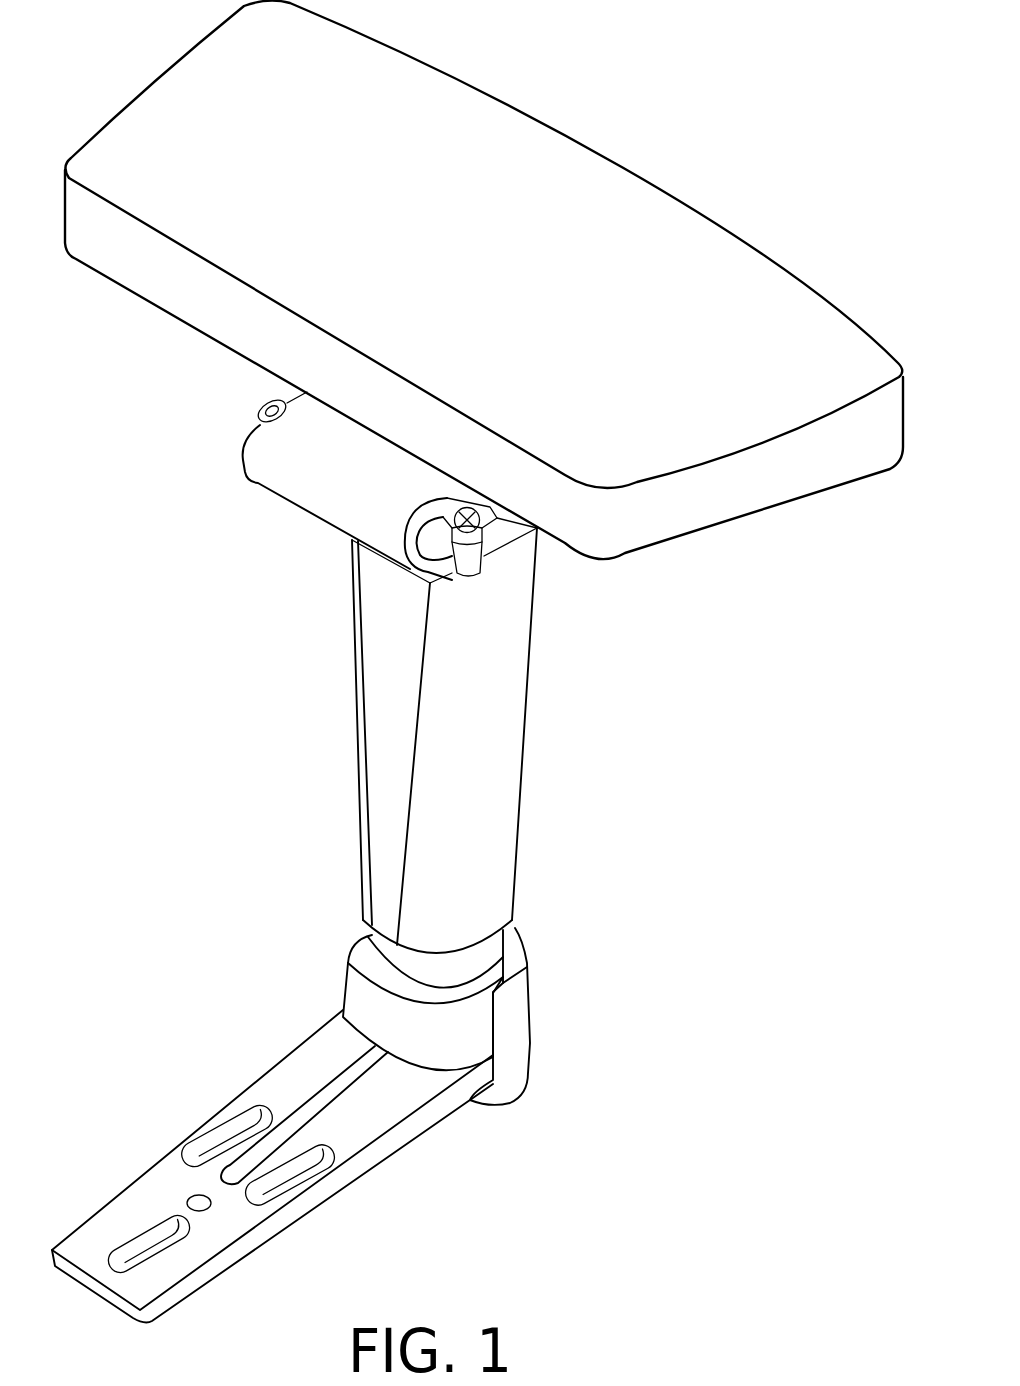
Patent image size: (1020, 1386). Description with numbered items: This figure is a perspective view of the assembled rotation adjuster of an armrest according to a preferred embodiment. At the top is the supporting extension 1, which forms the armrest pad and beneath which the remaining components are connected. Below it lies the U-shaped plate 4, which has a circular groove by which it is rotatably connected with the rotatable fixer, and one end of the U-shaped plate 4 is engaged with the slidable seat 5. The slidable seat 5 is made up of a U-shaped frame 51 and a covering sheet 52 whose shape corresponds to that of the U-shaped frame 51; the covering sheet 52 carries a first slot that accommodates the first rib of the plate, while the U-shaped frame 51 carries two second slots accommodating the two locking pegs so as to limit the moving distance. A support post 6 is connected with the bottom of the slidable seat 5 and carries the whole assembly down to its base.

The supporting extension 1 is at (570, 277).
The U-shaped plate 4 is at (300, 483).
The slidable seat 5 is at (503, 537).
The U-shaped frame 51 is at (447, 578).
The covering sheet 52 is at (481, 515).
The support post 6 is at (380, 750).